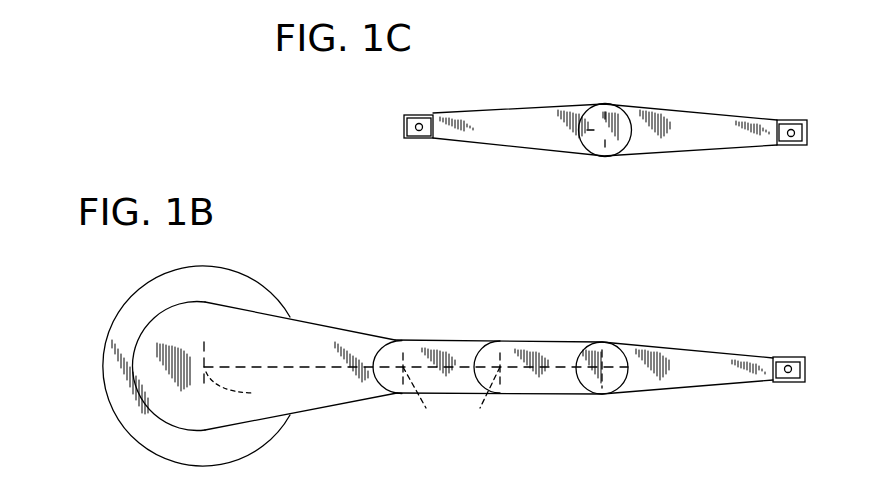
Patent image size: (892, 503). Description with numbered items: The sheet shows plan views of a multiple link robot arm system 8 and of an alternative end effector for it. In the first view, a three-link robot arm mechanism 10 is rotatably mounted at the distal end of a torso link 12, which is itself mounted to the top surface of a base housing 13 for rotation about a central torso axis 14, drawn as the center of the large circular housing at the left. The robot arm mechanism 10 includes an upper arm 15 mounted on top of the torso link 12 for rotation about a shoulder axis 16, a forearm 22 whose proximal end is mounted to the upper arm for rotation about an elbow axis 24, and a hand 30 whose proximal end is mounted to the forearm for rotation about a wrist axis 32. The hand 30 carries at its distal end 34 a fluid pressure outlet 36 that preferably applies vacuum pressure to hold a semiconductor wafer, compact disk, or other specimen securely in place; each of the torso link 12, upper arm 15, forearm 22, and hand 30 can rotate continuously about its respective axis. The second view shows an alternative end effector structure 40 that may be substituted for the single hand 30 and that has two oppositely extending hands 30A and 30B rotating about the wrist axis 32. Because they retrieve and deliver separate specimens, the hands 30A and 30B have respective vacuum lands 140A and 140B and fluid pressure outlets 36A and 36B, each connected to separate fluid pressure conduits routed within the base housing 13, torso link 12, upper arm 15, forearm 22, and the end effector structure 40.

In FIG. 1B, the multiple link robot arm system 8 is at (100, 439).
In FIG. 1B, the three-link robot arm mechanism 10 is at (657, 301).
In FIG. 1B, the torso link 12 is at (336, 340).
In FIG. 1B, the base housing 13 is at (135, 310).
In FIG. 1B, the torso axis 14 is at (247, 390).
In FIG. 1B, the upper arm 15 is at (444, 340).
In FIG. 1B, the shoulder axis 16 is at (422, 401).
In FIG. 1B, the forearm 22 is at (549, 354).
In FIG. 1B, the elbow axis 24 is at (481, 401).
In FIG. 1B, the hand 30 is at (722, 367).
In FIG. 1B, the wrist axis 32 is at (602, 368).
In FIG. 1C, the wrist axis 32 is at (605, 130).
In FIG. 1B, the distal end of hand 34 is at (806, 372).
In FIG. 1B, the fluid pressure outlet 36 is at (790, 365).
In FIG. 1C, the alternative end effector structure 40 is at (483, 171).
In FIG. 1C, the first oppositely extending hand 30A is at (697, 118).
In FIG. 1C, the second oppositely extending hand 30B is at (518, 118).
In FIG. 1C, the fluid pressure outlet of hand 30A 36A is at (790, 129).
In FIG. 1C, the fluid pressure outlet of hand 30B 36B is at (420, 124).
In FIG. 1C, the vacuum land of hand 30A 140A is at (800, 145).
In FIG. 1C, the vacuum land of hand 30B 140B is at (410, 138).